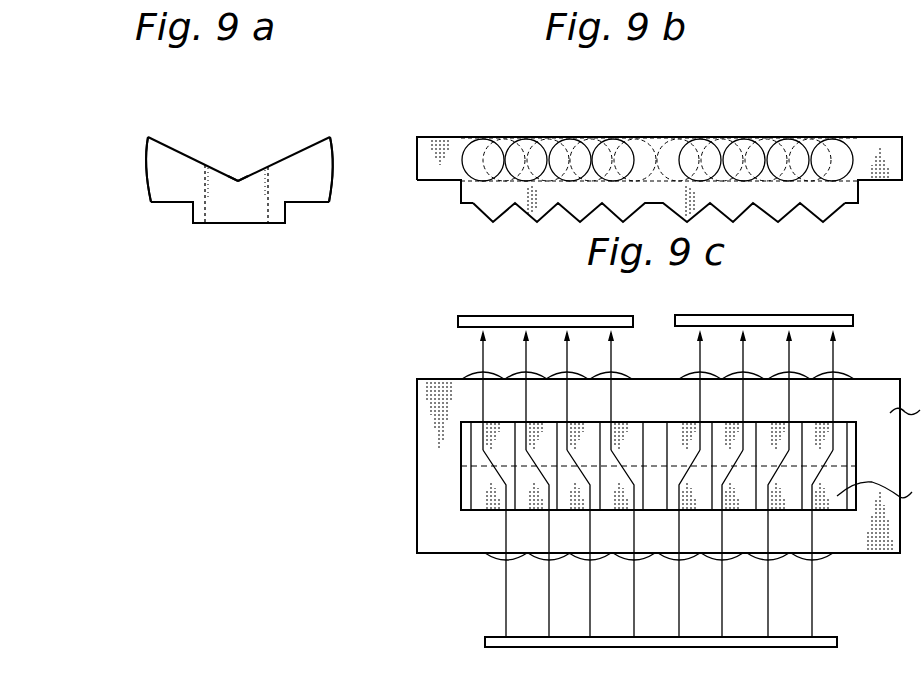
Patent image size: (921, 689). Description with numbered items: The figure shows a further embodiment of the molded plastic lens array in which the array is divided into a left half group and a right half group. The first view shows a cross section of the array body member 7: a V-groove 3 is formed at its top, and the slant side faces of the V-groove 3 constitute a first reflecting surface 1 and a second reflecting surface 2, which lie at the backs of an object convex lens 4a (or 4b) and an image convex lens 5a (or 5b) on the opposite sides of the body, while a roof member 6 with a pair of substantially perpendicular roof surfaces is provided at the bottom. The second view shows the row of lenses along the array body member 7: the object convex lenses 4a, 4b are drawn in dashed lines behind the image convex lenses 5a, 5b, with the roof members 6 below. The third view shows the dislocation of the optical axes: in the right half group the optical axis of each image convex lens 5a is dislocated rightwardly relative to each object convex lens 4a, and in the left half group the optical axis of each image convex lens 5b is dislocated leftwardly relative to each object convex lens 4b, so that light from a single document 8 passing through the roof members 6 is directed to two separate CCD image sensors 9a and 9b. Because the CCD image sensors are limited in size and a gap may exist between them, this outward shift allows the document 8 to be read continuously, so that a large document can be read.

In FIG. 9A, the first reflecting surface 1 is at (175, 148).
In FIG. 9A, the second reflecting surface 2 is at (313, 143).
In FIG. 9A, the V-groove 3 is at (252, 165).
In FIG. 9A, the object convex lens 4a is at (114, 158).
In FIG. 9B, the object convex lens 4a is at (816, 133).
In FIG. 9C, the object convex lens 4a is at (827, 556).
In FIG. 9A, the object convex lens 4b is at (148, 147).
In FIG. 9B, the object convex lens 4b is at (514, 135).
In FIG. 9C, the object convex lens 4b is at (497, 558).
In FIG. 9A, the image convex lens 5a is at (350, 137).
In FIG. 9B, the image convex lens 5a is at (843, 143).
In FIG. 9C, the image convex lens 5a is at (845, 376).
In FIG. 9A, the image convex lens 5b is at (338, 151).
In FIG. 9B, the image convex lens 5b is at (477, 143).
In FIG. 9C, the image convex lens 5b is at (471, 378).
In FIG. 9A, the roof member 6 is at (215, 224).
In FIG. 9B, the roof member 6 is at (490, 214).
In FIG. 9C, the roof member 6 is at (478, 493).
In FIG. 9B, the array body member 7 is at (450, 143).
In FIG. 9C, the document 8 is at (830, 637).
In FIG. 9C, the CCD image sensor 9a is at (797, 313).
In FIG. 9C, the CCD image sensor 9b is at (558, 313).